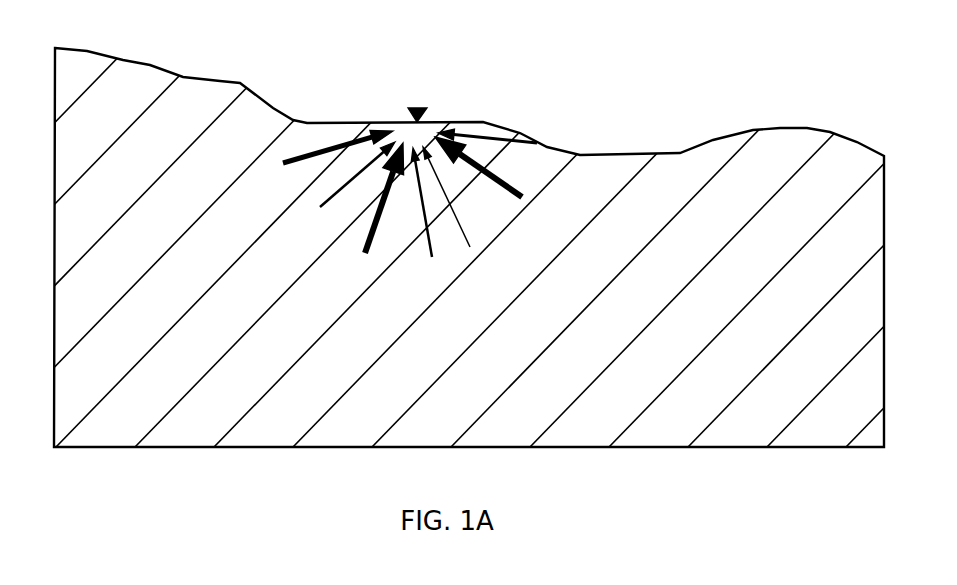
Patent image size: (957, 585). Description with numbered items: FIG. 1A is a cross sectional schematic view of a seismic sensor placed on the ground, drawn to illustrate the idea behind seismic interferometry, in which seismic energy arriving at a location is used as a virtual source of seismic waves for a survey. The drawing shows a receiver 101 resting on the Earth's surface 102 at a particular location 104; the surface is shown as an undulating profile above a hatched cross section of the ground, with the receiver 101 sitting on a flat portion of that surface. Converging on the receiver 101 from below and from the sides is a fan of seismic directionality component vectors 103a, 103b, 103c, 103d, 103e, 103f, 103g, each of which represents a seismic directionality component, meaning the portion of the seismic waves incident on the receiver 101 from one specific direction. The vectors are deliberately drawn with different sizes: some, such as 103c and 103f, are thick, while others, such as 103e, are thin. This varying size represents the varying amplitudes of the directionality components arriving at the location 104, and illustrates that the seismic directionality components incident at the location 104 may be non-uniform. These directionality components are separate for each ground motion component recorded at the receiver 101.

The receiver 101 is at (420, 108).
The Earth's surface 102 is at (147, 62).
The directionality component vector 103a is at (317, 152).
The directionality component vector 103b is at (323, 208).
The directionality component vector 103c is at (362, 242).
The directionality component vector 103d is at (418, 257).
The directionality component vector 103e is at (466, 236).
The directionality component vector 103f is at (507, 178).
The directionality component vector 103g is at (497, 138).
The location 104 is at (456, 103).